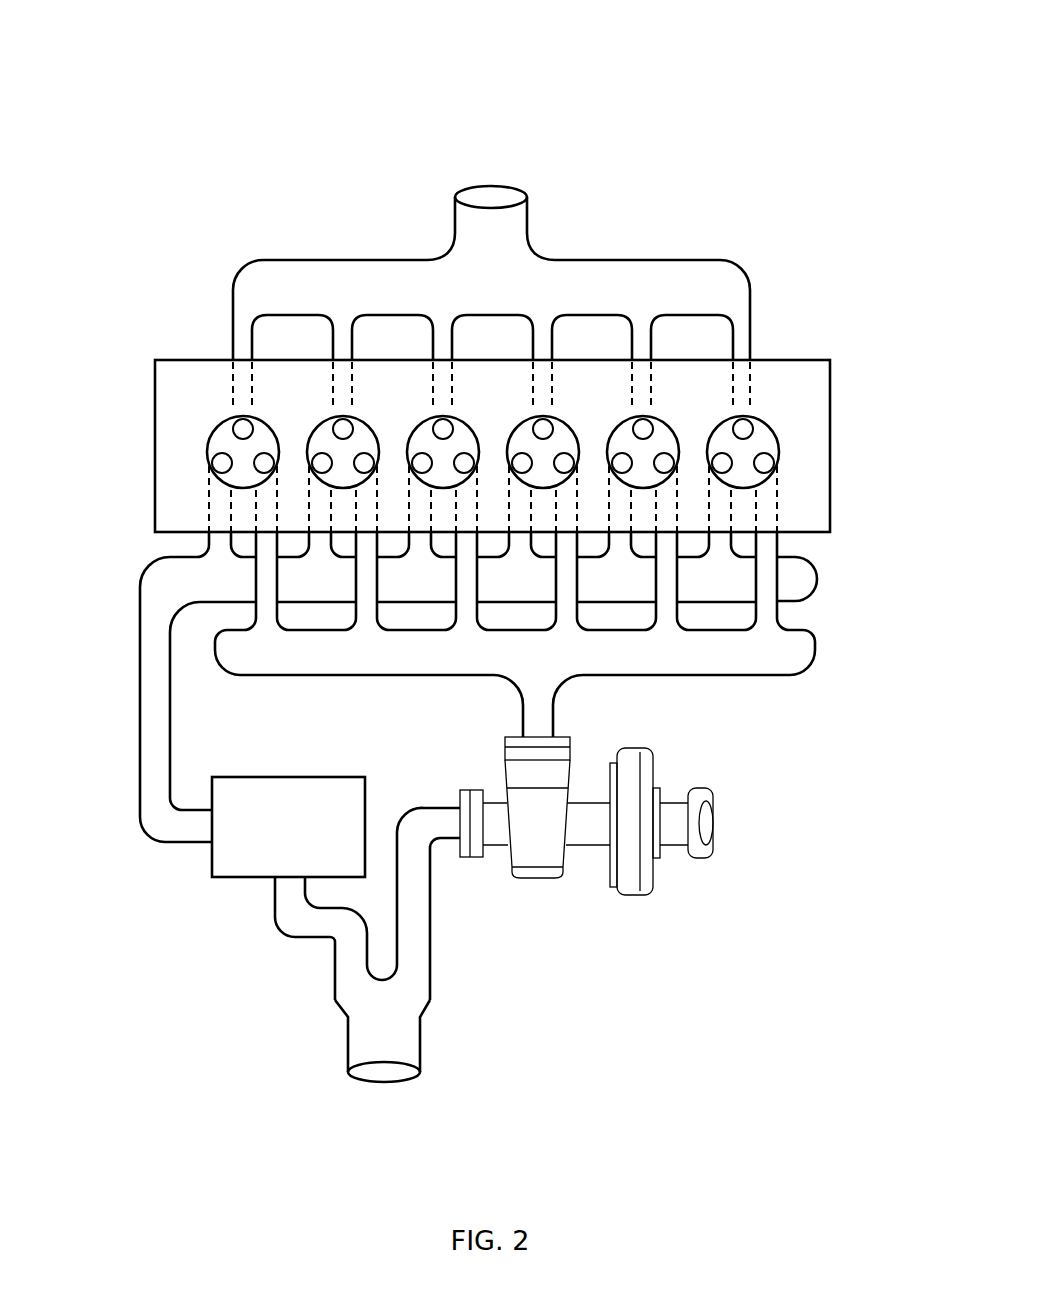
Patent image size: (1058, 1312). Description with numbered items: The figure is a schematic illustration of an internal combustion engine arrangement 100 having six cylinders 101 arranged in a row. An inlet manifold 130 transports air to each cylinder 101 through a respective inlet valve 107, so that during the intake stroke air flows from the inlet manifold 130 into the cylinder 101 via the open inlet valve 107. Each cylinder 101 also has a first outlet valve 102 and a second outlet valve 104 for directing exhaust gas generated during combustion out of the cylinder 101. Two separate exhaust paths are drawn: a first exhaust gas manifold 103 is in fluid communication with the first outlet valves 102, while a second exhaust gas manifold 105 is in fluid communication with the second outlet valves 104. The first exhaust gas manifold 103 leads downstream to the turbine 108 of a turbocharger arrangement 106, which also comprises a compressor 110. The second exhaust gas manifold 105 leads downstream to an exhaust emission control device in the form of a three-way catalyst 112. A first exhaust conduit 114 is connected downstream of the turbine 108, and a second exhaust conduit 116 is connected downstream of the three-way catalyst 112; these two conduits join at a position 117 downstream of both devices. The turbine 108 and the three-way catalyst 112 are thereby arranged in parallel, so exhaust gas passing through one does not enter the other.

The internal combustion engine arrangement 100 is at (851, 101).
The cylinder 101 is at (420, 427).
The first outlet valve 102 is at (458, 460).
The first exhaust gas manifold 103 is at (812, 660).
The second outlet valve 104 is at (412, 458).
The second exhaust gas manifold 105 is at (140, 700).
The turbocharger arrangement 106 is at (688, 912).
The inlet valve 107 is at (433, 428).
The turbine 108 is at (540, 880).
The compressor 110 is at (655, 770).
The three-way catalyst 112 is at (240, 878).
The first exhaust conduit 114 is at (430, 922).
The second exhaust conduit 116 is at (277, 925).
The position 117 is at (380, 1016).
The inlet manifold 130 is at (423, 258).